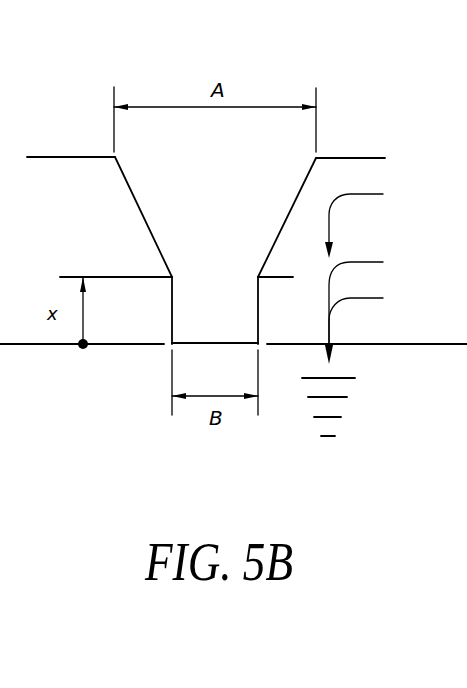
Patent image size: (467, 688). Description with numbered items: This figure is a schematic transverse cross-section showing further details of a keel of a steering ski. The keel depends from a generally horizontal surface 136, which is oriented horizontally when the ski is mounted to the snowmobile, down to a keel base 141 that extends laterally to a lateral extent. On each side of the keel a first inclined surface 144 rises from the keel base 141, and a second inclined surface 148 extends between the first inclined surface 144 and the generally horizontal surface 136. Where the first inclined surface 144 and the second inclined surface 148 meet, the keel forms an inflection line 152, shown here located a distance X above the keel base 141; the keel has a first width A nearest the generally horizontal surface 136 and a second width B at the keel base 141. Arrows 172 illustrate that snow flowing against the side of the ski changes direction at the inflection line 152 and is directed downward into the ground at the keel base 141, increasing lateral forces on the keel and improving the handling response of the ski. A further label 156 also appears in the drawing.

The generally horizontal surface 136 is at (50, 158).
The second inclined surface 148 is at (144, 220).
The intermediate layer 156 is at (146, 259).
The inflection line 152 is at (171, 285).
The keel base 141 is at (213, 346).
The first inclined surface 144 is at (168, 320).
The arrows 172 is at (389, 193).